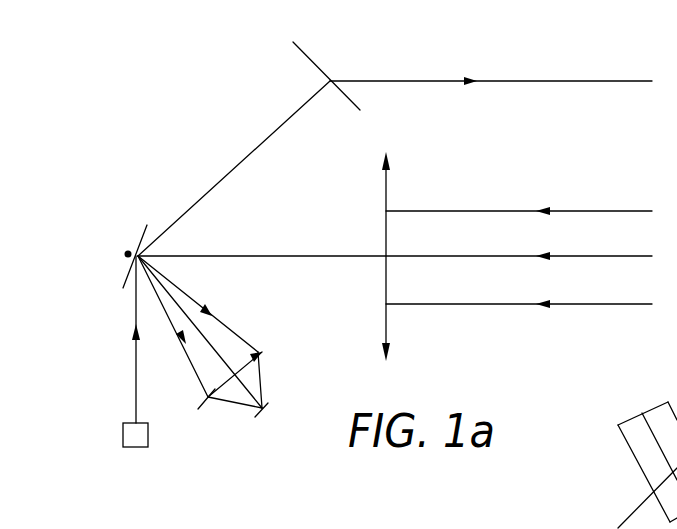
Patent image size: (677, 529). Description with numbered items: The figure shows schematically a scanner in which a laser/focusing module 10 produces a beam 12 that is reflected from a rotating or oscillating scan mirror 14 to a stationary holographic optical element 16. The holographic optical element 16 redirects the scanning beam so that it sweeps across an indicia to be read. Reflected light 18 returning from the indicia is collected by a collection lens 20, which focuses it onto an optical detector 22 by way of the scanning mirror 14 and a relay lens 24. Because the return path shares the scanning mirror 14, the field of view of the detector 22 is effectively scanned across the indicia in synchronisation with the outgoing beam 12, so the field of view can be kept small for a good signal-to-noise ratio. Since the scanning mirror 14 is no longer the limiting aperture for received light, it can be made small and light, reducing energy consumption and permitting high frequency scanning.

The laser/focusing module 10 is at (133, 448).
The beam 12 is at (136, 350).
The scan mirror 14 is at (138, 233).
The holographic optical element 16 is at (312, 58).
The reflected light 18 is at (501, 305).
The collection lens 20 is at (388, 326).
The optical detector 22 is at (253, 418).
The relay lens 24 is at (202, 402).